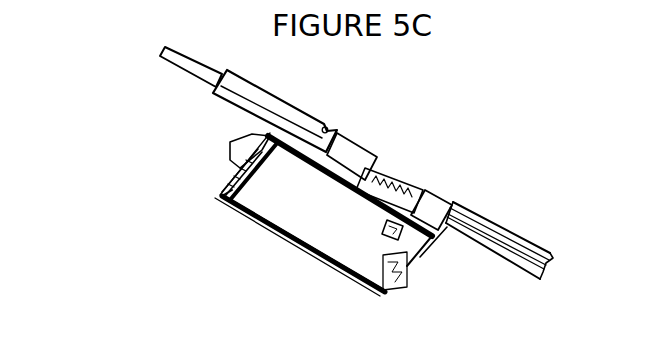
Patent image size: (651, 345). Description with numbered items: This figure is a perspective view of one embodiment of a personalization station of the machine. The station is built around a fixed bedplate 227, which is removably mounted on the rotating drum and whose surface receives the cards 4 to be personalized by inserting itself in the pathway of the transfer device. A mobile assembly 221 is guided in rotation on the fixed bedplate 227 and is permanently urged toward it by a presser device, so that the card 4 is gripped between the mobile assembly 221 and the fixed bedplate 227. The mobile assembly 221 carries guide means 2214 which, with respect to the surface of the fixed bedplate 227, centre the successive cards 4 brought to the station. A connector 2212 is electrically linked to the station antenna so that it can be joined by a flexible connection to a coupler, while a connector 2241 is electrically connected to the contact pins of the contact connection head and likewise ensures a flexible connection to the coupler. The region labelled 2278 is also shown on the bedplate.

The card 4 is at (215, 183).
The mobile assembly 221 is at (218, 136).
The fixed bedplate 227 is at (208, 196).
The connector 2212 is at (418, 235).
The guide means 2214 is at (228, 174).
The connector 2241 is at (397, 185).
The panel 2278 is at (288, 205).